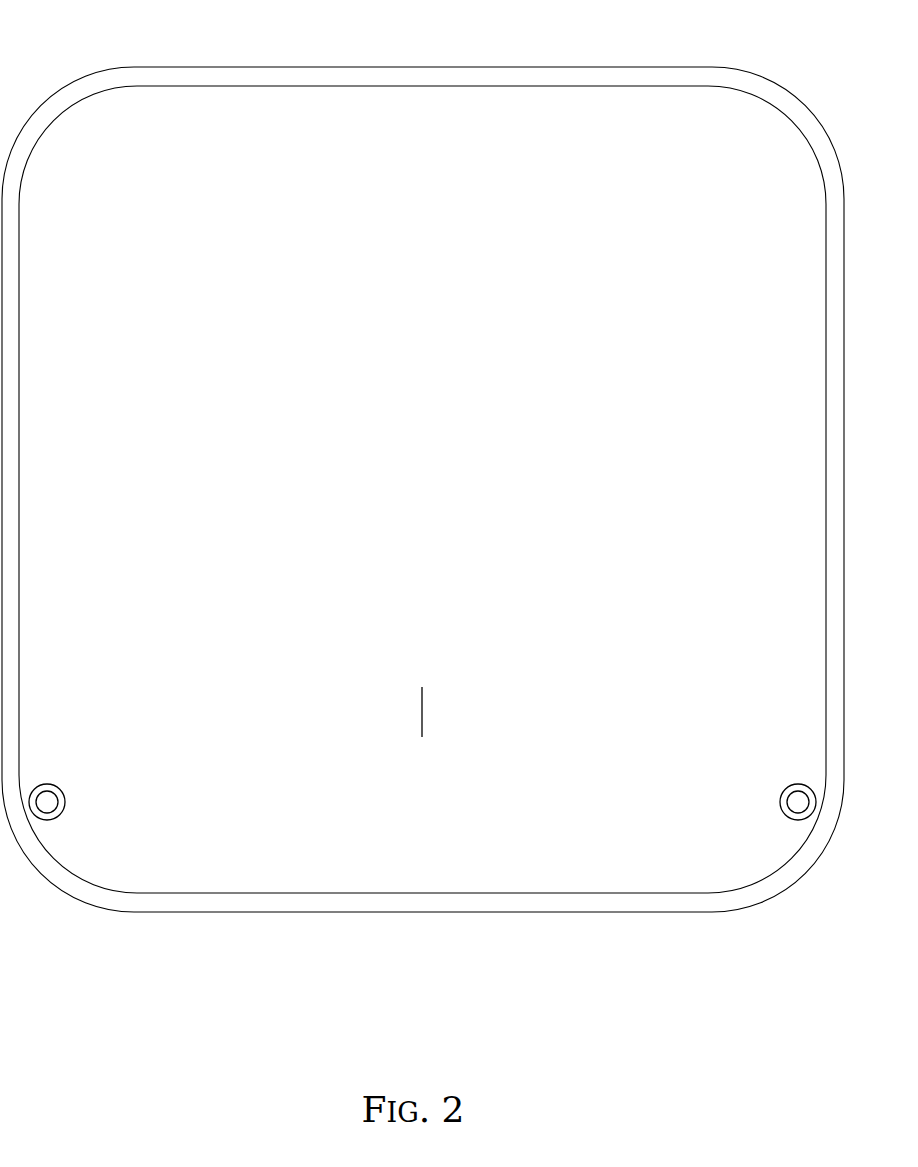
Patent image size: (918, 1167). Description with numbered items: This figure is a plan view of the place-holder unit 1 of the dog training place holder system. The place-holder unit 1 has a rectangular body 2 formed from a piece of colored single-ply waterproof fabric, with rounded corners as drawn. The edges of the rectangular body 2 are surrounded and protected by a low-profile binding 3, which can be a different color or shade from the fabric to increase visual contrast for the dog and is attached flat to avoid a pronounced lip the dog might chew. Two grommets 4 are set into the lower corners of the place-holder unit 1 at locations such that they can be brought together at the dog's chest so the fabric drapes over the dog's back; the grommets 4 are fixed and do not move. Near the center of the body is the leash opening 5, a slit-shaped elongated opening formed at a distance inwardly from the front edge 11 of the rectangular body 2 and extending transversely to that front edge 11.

The place-holder unit 1 is at (97, 32).
The rectangular body 2 is at (417, 504).
The low-profile binding 3 is at (641, 903).
The grommets 4 is at (60, 804).
The leash opening 5 is at (424, 708).
The front edge 11 is at (764, 907).